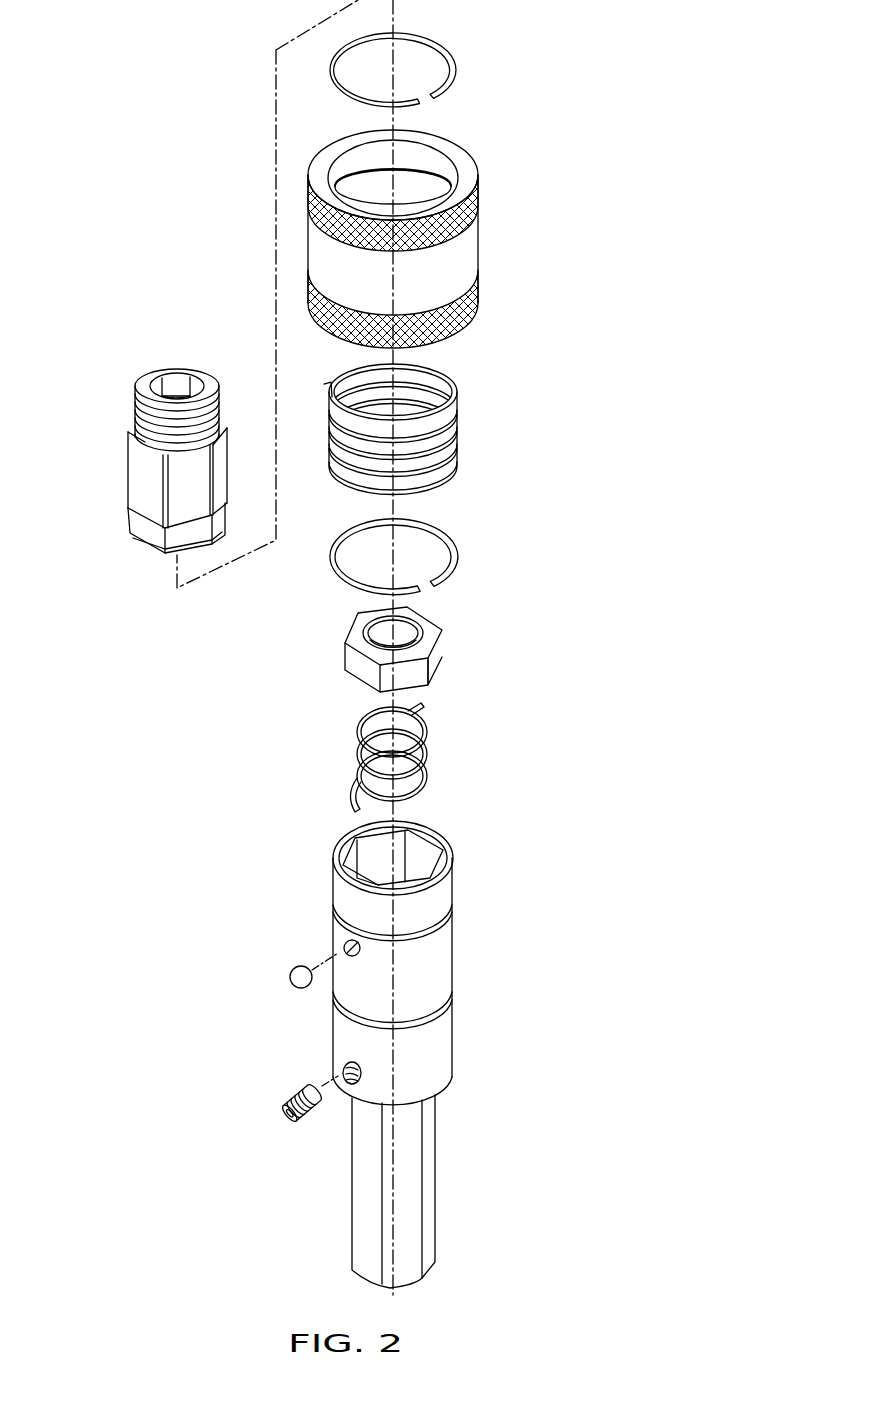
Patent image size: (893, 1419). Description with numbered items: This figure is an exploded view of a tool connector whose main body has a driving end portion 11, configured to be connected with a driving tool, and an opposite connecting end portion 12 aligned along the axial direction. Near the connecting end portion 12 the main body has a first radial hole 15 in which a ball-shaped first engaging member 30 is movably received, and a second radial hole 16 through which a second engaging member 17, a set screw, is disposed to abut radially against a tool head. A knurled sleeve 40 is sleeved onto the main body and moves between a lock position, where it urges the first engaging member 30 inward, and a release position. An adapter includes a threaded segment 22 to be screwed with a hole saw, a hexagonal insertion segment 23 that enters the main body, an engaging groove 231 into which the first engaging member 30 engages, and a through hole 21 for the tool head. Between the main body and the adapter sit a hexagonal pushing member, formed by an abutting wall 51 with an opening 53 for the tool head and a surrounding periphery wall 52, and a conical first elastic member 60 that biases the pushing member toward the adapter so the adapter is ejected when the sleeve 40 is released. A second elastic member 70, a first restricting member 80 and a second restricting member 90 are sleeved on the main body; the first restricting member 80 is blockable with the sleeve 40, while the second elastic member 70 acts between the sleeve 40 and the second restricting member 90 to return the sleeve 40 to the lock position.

The driving end portion 11 is at (441, 1280).
The connecting end portion 12 is at (466, 851).
The first radial hole 15 is at (344, 946).
The second radial hole 16 is at (344, 1070).
The second engaging member 17 is at (282, 1107).
The through hole 21 is at (177, 379).
The threaded segment 22 is at (132, 413).
The insertion segment 23 is at (140, 470).
The engaging groove 231 is at (140, 521).
The first engaging member 30 is at (290, 976).
The sleeve 40 is at (468, 244).
The abutting wall 51 is at (425, 622).
The periphery wall 52 is at (440, 652).
The opening 53 is at (365, 632).
The first elastic member 60 is at (435, 792).
The second elastic member 70 is at (460, 403).
The first restricting member 80 is at (453, 64).
The second restricting member 90 is at (455, 553).